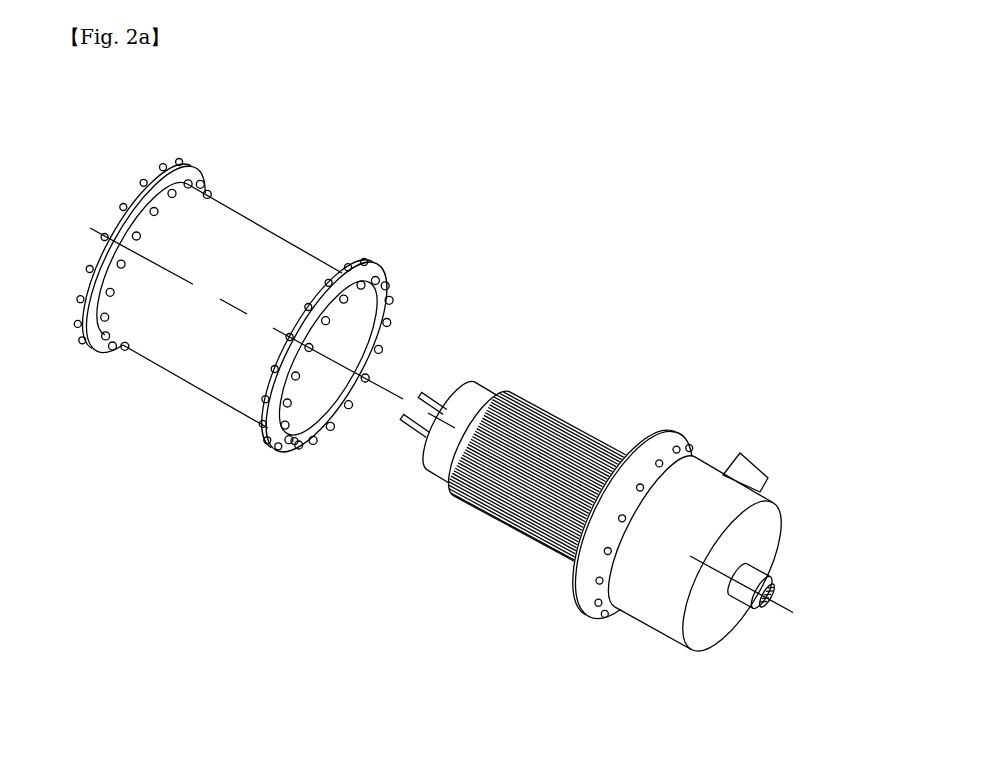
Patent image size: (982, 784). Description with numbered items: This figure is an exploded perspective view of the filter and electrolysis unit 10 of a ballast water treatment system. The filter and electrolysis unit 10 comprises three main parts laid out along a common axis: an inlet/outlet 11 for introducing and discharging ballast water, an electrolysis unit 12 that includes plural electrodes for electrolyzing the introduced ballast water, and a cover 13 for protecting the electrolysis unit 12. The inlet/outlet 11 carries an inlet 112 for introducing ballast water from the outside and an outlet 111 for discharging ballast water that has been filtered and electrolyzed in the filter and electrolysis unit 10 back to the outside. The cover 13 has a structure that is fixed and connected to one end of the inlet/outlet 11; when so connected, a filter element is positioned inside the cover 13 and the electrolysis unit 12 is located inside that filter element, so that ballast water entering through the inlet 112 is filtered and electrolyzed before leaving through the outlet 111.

The filter and electrolysis unit 10 is at (280, 148).
The inlet/outlet 11 is at (691, 567).
The outlet 111 is at (772, 590).
The inlet 112 is at (752, 463).
The electrolysis unit 12 is at (500, 560).
The cover 13 is at (211, 425).